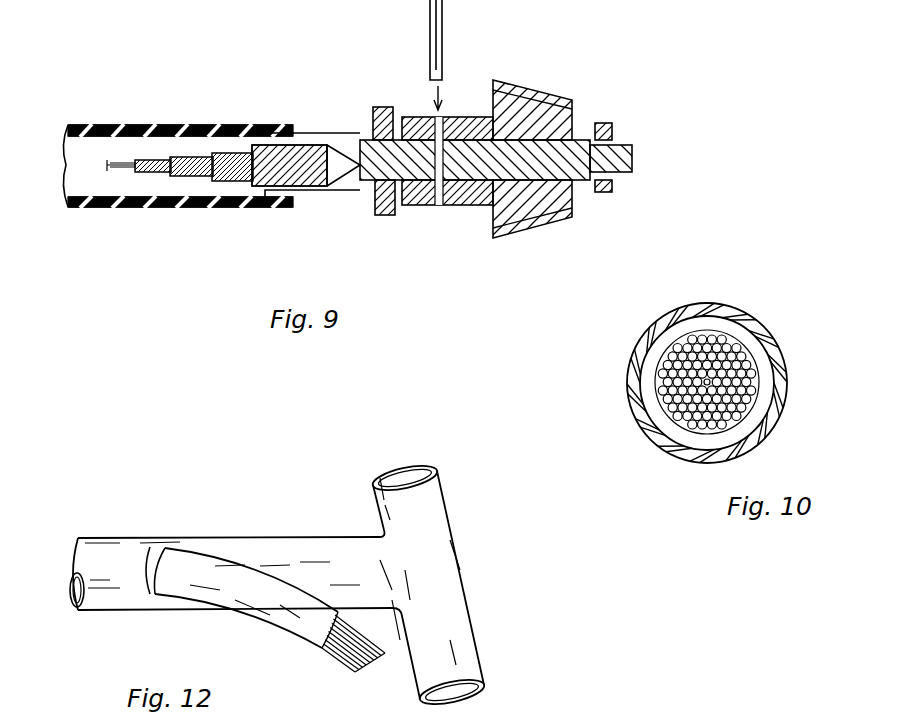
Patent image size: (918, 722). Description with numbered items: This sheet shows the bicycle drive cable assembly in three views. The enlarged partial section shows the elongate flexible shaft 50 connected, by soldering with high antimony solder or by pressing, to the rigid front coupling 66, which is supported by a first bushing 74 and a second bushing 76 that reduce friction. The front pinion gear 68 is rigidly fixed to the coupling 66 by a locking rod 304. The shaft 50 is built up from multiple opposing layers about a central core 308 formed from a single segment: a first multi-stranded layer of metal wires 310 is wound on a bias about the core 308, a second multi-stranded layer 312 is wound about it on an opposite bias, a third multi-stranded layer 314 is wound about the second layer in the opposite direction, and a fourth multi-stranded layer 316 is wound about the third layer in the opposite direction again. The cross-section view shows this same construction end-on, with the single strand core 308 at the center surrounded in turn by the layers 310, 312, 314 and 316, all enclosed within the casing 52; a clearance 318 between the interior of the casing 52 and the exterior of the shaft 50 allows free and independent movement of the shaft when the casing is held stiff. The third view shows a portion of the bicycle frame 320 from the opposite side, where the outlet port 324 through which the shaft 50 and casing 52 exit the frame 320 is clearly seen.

In FIG. 9, the elongate flexible shaft 50 is at (300, 187).
In FIG. 10, the elongate flexible shaft 50 is at (801, 371).
In FIG. 12, the elongate flexible shaft 50 is at (343, 654).
In FIG. 9, the casing 52 is at (100, 209).
In FIG. 10, the casing 52 is at (768, 334).
In FIG. 12, the casing 52 is at (252, 593).
In FIG. 9, the front coupling 66 is at (352, 178).
In FIG. 9, the front pinion gear 68 is at (548, 200).
In FIG. 9, the first bushing 74 is at (383, 105).
In FIG. 9, the second bushing 76 is at (603, 122).
In FIG. 9, the locking rod 304 is at (442, 28).
In FIG. 9, the central core 308 is at (120, 172).
In FIG. 10, the central core 308 is at (701, 410).
In FIG. 9, the first multi-stranded layer of metal wires 310 is at (158, 174).
In FIG. 10, the first multi-stranded layer of metal wires 310 is at (667, 413).
In FIG. 9, the second multi-stranded layer of metal wires 312 is at (201, 178).
In FIG. 10, the second multi-stranded layer of metal wires 312 is at (672, 383).
In FIG. 9, the third multi-stranded layer of metal wires 314 is at (236, 182).
In FIG. 10, the third multi-stranded layer of metal wires 314 is at (670, 375).
In FIG. 9, the fourth multi-stranded layer of metal wires 316 is at (300, 144).
In FIG. 10, the fourth multi-stranded layer of metal wires 316 is at (668, 353).
In FIG. 10, the clearance 318 is at (733, 330).
In FIG. 12, the frame 320 is at (268, 555).
In FIG. 12, the outlet port 324 is at (157, 607).